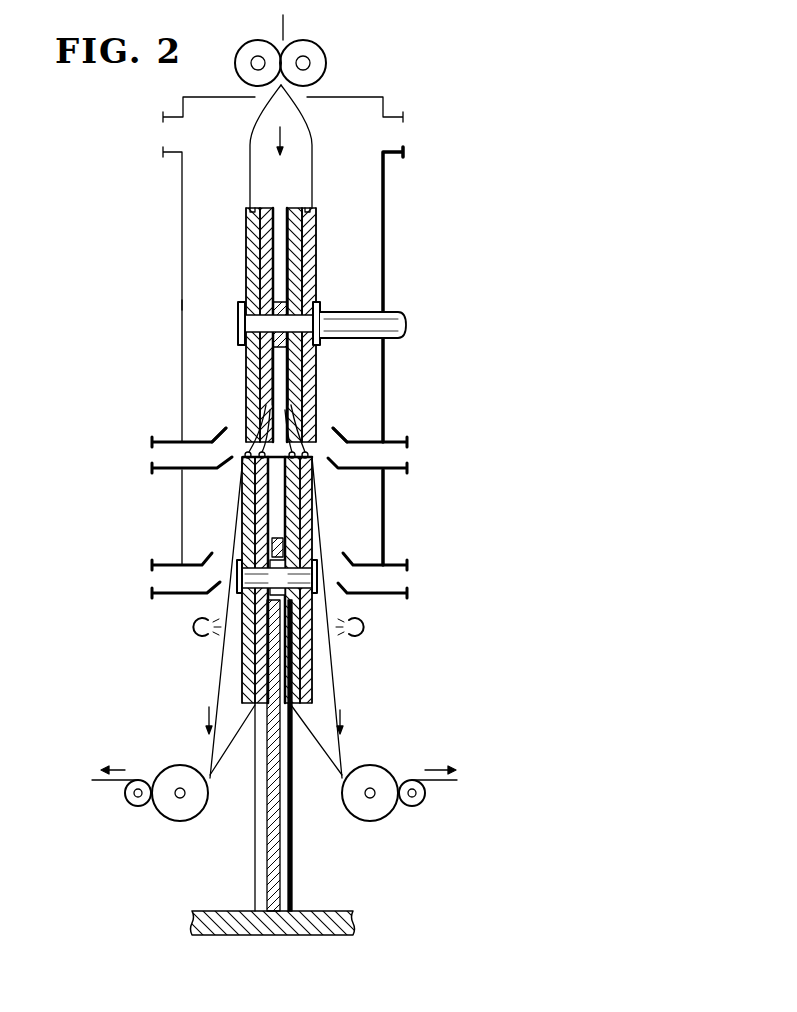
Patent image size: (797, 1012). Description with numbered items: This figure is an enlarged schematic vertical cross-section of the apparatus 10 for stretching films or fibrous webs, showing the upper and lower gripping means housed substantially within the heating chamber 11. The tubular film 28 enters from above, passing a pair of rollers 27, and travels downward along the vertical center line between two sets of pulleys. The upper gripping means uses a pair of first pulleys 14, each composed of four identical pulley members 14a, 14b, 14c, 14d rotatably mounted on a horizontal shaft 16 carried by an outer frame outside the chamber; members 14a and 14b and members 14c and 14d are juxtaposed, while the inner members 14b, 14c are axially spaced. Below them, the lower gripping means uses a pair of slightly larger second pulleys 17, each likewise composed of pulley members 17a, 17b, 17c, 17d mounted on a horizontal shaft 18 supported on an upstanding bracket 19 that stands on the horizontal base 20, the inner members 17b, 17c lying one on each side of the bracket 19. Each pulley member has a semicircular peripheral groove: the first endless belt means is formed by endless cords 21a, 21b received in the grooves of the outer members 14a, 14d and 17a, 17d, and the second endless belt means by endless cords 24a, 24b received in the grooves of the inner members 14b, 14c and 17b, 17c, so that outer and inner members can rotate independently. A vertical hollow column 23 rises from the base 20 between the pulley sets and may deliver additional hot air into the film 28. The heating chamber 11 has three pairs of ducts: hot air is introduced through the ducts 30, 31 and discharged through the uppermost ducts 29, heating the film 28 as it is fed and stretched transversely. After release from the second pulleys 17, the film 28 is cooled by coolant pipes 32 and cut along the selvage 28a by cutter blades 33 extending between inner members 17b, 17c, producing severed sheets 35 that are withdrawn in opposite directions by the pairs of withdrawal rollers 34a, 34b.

The apparatus 10 is at (462, 148).
The heating chamber 11 is at (190, 306).
The first pulley 14 is at (285, 306).
The first pulley member 14a is at (255, 228).
The first pulley member 14b is at (262, 265).
The first pulley member 14c is at (295, 240).
The first pulley member 14d is at (308, 262).
The horizontal shaft 16 is at (320, 318).
The second pulley 17 is at (269, 617).
The second pulley member 17a is at (248, 650).
The second pulley member 17b is at (260, 680).
The second pulley member 17c is at (290, 650).
The second pulley member 17d is at (300, 675).
The horizontal shaft 18 is at (315, 560).
The upstanding bracket 19 is at (272, 803).
The horizontal base 20 is at (250, 922).
The endless cord 21a is at (222, 435).
The endless cord 21b is at (332, 432).
The vertical hollow column 23 is at (293, 863).
The endless cord 24a is at (248, 450).
The endless cord 24b is at (318, 418).
The feed rollers 27 is at (321, 58).
The tubular film 28 is at (283, 36).
The selvage 28a is at (253, 427).
The duct 29 is at (165, 115).
The duct 30 is at (150, 444).
The duct 31 is at (152, 580).
The coolant pipe 32 is at (190, 627).
The cutter blade 33 is at (306, 697).
The withdrawal roller 34a is at (172, 780).
The withdrawal roller 34b is at (423, 830).
The severed sheet 35 is at (105, 778).